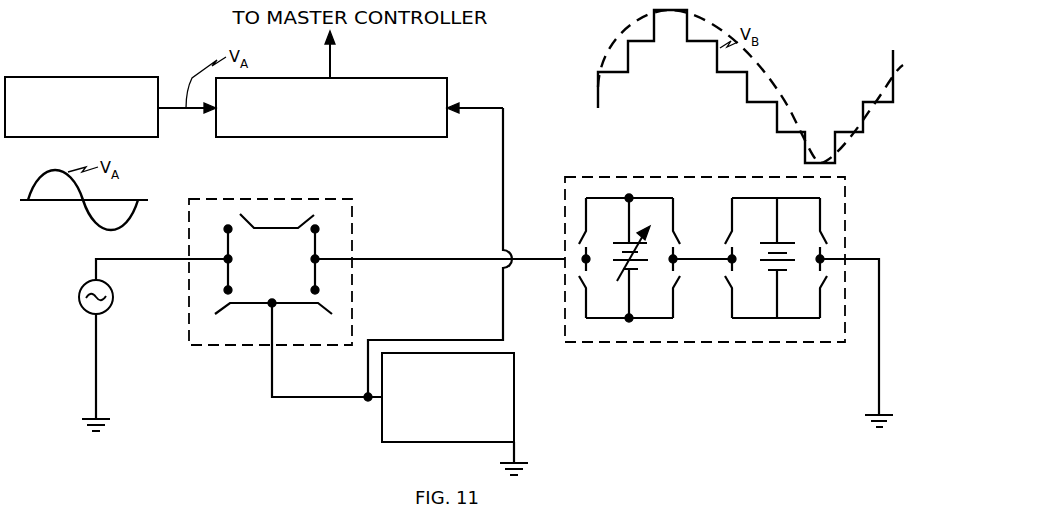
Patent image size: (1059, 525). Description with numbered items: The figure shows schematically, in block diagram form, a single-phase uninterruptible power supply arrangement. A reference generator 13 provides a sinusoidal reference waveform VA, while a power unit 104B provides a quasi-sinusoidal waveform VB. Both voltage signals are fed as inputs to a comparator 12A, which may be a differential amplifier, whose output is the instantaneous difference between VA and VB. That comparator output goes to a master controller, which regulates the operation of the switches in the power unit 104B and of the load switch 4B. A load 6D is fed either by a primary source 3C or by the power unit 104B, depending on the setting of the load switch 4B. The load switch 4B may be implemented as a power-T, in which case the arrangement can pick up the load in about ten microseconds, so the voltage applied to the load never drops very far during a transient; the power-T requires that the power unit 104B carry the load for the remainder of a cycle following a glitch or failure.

The reference generator 13 is at (63, 77).
The comparator 12A is at (373, 77).
The primary source 3C is at (80, 288).
The load switch 4B is at (355, 343).
The load 6D is at (516, 427).
The power unit 104B is at (566, 176).